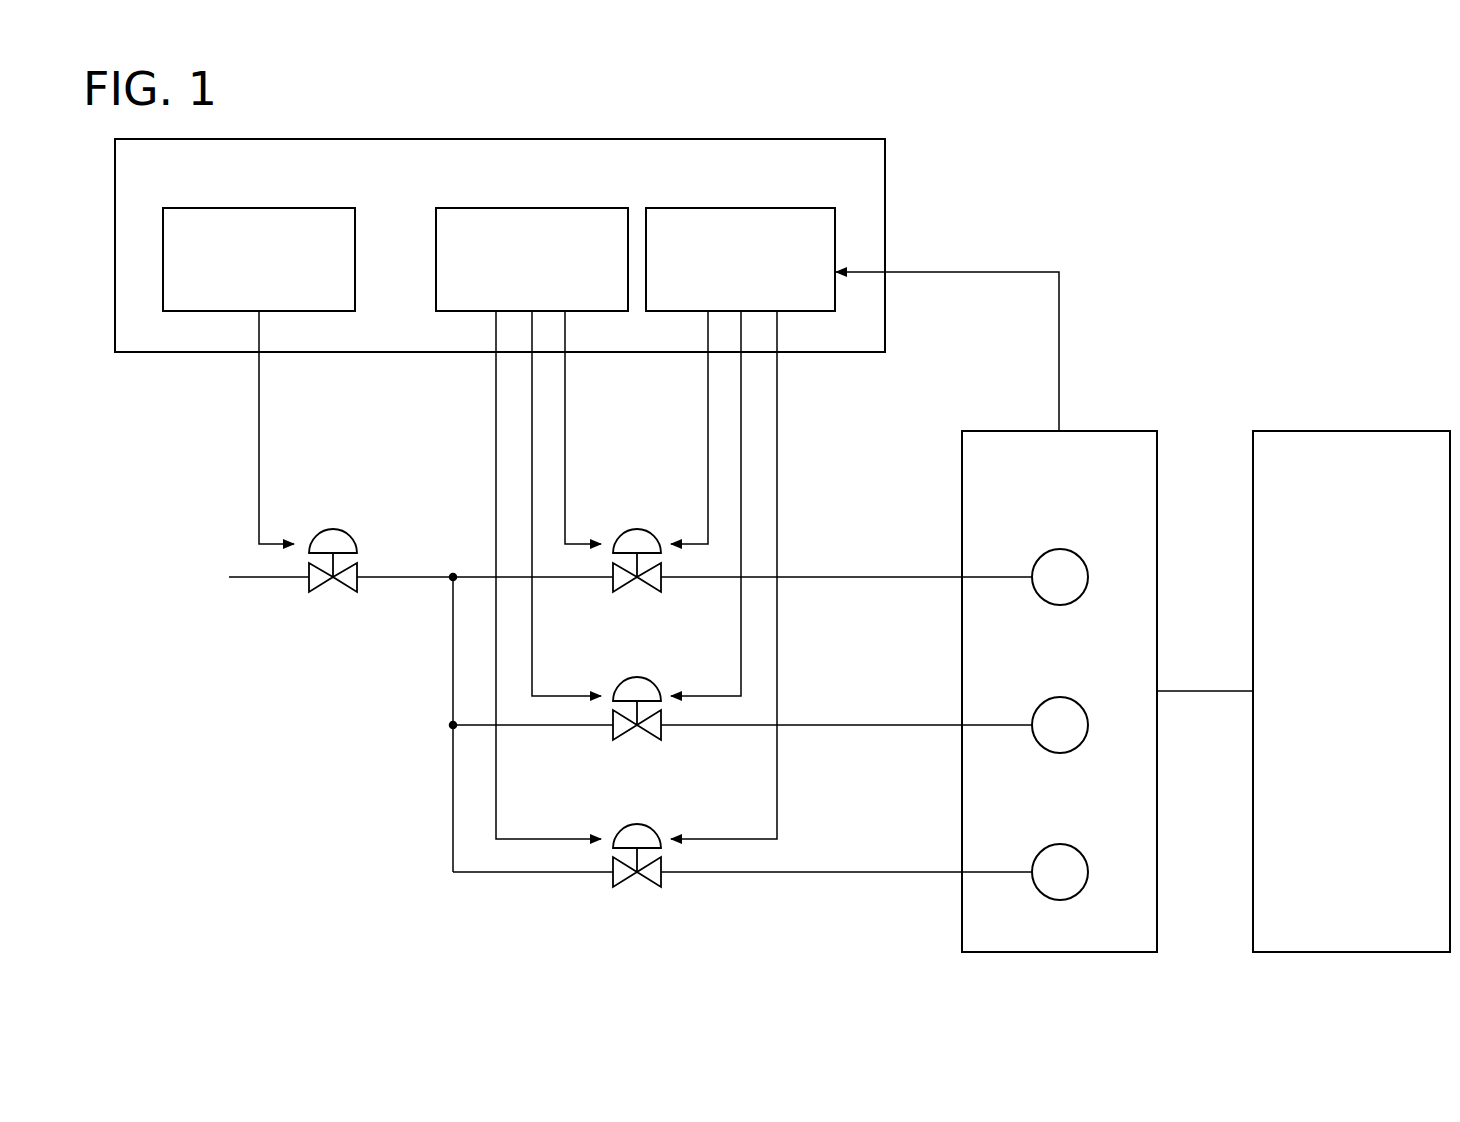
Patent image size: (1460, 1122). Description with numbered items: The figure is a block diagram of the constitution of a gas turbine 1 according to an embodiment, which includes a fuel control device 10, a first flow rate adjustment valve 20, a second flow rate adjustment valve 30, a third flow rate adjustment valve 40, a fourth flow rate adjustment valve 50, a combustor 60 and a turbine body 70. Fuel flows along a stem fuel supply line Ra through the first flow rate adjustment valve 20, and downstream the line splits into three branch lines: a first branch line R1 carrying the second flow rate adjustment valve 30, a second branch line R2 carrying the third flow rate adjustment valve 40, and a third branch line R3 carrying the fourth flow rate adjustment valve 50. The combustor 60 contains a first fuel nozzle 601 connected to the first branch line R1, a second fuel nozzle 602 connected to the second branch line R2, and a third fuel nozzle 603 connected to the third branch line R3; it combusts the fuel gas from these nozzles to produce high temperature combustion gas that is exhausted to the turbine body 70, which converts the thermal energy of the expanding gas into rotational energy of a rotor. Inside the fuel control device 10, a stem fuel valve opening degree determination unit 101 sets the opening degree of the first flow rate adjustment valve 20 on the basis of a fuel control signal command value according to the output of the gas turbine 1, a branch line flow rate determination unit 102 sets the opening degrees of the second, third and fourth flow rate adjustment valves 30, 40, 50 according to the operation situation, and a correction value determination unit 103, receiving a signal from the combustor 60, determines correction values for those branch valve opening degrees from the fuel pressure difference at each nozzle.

The gas turbine 1 is at (1254, 180).
The fuel control device 10 is at (502, 139).
The stem fuel valve opening degree determination unit 101 is at (287, 208).
The branch line flow rate determination unit 102 is at (560, 208).
The correction value determination unit 103 is at (770, 208).
The first flow rate adjustment valve 20 is at (336, 529).
The second flow rate adjustment valve 30 is at (637, 529).
The third flow rate adjustment valve 40 is at (637, 677).
The fourth flow rate adjustment valve 50 is at (637, 824).
The combustor 60 is at (1115, 431).
The first fuel nozzle 601 is at (1060, 549).
The second fuel nozzle 602 is at (1060, 697).
The third fuel nozzle 603 is at (1060, 844).
The turbine body 70 is at (1355, 431).
The stem fuel supply line Ra is at (410, 576).
The first branch line R1 is at (870, 576).
The second branch line R2 is at (870, 724).
The third branch line R3 is at (870, 871).